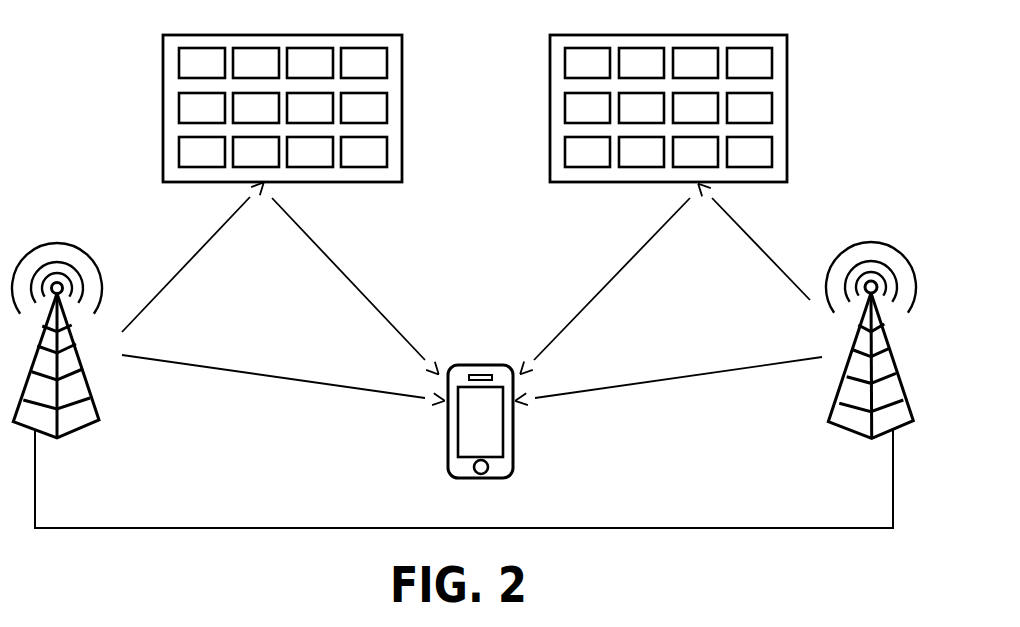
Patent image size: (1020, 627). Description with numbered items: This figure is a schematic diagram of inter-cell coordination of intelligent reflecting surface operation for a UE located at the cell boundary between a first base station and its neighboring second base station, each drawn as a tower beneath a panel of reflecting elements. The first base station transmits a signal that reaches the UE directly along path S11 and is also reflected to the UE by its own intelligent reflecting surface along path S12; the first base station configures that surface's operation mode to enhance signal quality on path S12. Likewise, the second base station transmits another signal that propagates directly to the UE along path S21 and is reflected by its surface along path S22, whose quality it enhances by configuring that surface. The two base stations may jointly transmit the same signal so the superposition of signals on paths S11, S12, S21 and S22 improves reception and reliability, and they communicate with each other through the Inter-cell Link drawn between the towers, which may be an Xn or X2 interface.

The element UE is at (513, 443).
The path S11 is at (273, 386).
The path S12 is at (348, 279).
The path S21 is at (678, 387).
The path S22 is at (612, 279).
The inter-cell link Inter-cell Link is at (464, 497).